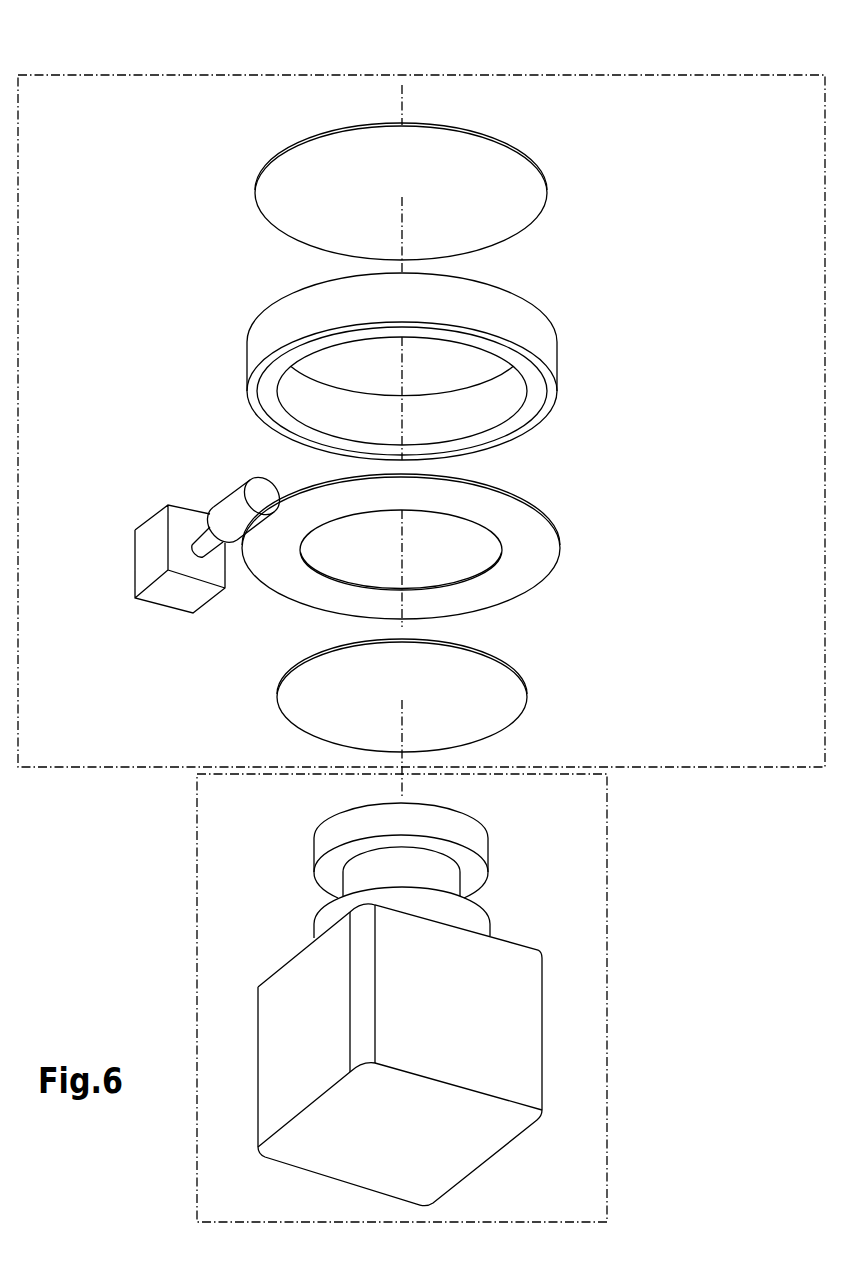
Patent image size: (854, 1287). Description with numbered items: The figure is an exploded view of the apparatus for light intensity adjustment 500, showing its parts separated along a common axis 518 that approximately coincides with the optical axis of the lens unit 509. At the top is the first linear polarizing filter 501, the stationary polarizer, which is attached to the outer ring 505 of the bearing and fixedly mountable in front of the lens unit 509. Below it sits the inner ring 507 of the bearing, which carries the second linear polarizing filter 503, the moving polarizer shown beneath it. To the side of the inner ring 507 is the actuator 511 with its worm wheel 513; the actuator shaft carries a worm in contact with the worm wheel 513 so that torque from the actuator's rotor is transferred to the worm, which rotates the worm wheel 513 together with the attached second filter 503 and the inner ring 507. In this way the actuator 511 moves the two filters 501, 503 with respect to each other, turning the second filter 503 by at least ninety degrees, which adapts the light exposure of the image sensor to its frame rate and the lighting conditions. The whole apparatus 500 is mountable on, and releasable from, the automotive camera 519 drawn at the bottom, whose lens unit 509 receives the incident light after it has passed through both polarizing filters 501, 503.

The apparatus for light intensity adjustment 500 is at (200, 74).
The first linear polarizing filter 501 is at (511, 203).
The second linear polarizing filter 503 is at (493, 702).
The outer ring 505 is at (543, 342).
The inner ring 507 is at (552, 523).
The lens unit 509 is at (493, 850).
The actuator 511 is at (148, 543).
The worm wheel 513 is at (237, 513).
The optical axis 518 is at (402, 104).
The automotive camera 519 is at (607, 1067).